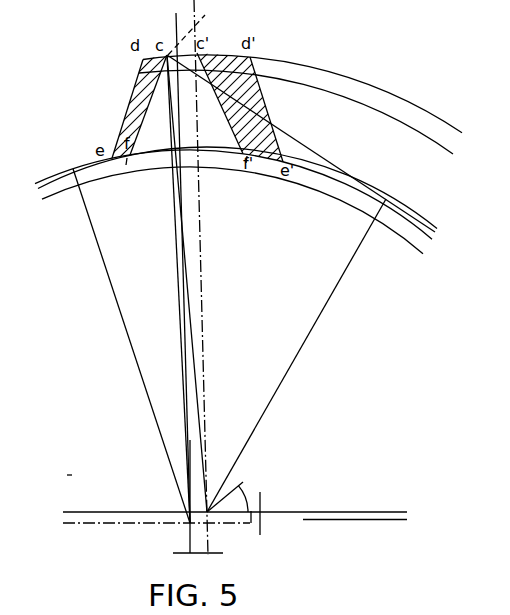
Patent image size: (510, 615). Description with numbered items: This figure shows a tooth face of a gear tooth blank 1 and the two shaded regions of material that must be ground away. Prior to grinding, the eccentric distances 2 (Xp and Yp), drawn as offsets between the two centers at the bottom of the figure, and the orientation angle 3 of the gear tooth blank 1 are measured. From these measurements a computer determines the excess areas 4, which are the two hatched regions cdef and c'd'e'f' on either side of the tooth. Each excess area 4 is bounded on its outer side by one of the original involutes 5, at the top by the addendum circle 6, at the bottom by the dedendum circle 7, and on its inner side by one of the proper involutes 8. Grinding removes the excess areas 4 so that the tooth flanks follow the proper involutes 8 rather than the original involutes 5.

The gear tooth blank 1 is at (202, 87).
The eccentric distances 2 is at (236, 531).
The orientation angle 3 is at (232, 497).
The excess areas 4 is at (118, 123).
The original involutes 5 is at (121, 98).
The addendum circle 6 is at (297, 60).
The dedendum circle 7 is at (92, 158).
The proper involutes 8 is at (160, 52).